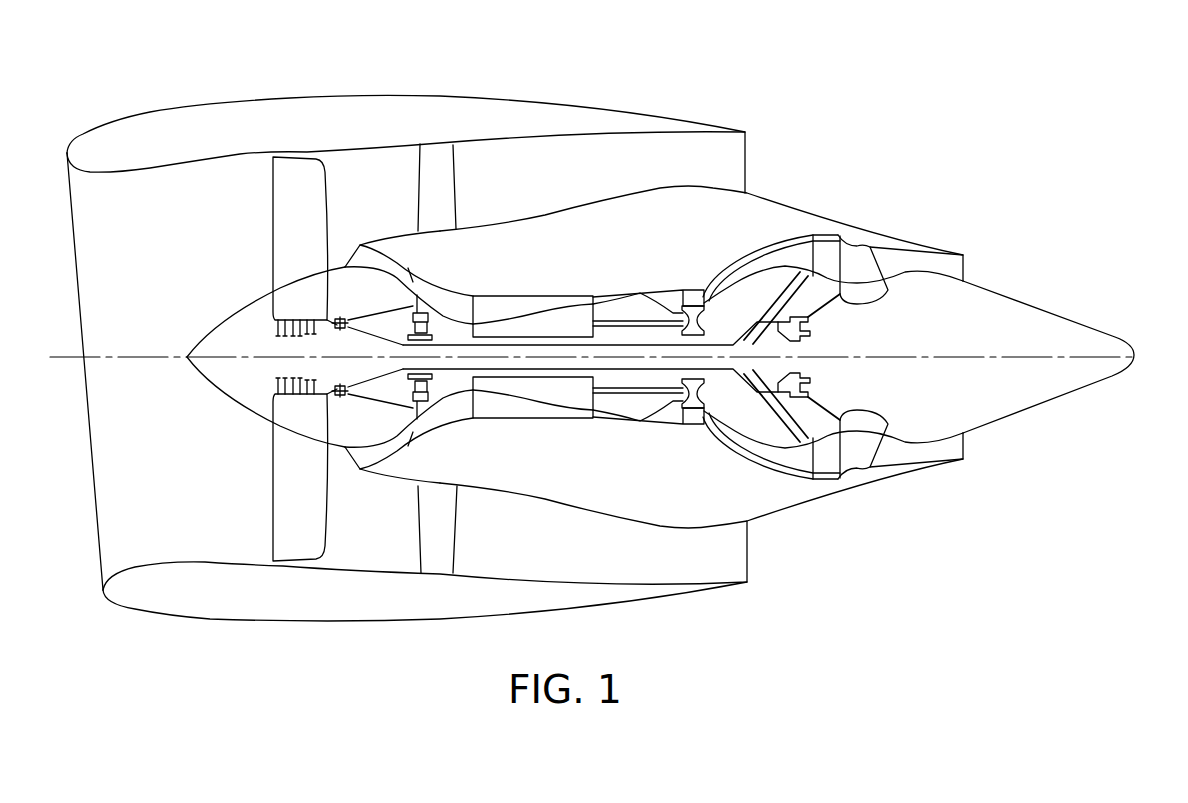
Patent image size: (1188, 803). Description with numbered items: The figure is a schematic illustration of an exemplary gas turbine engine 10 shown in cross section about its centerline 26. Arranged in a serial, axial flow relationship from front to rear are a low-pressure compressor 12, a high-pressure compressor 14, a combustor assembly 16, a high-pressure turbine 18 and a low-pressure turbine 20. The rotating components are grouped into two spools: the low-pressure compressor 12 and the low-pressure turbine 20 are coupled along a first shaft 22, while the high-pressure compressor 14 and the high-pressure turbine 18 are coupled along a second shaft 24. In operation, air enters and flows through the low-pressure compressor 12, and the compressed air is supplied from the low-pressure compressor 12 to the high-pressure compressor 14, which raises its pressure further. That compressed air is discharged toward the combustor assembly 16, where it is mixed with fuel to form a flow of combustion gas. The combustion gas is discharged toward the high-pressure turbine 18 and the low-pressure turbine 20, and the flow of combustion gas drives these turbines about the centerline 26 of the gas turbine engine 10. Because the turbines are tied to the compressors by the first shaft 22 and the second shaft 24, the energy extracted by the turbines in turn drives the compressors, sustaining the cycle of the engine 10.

The gas turbine engine 10 is at (647, 72).
The low-pressure compressor 12 is at (375, 258).
The high-pressure compressor 14 is at (495, 306).
The combustor assembly 16 is at (655, 302).
The high-pressure turbine 18 is at (686, 428).
The low-pressure turbine 20 is at (757, 255).
The first shaft 22 is at (457, 392).
The second shaft 24 is at (620, 326).
The centerline 26 is at (1053, 350).